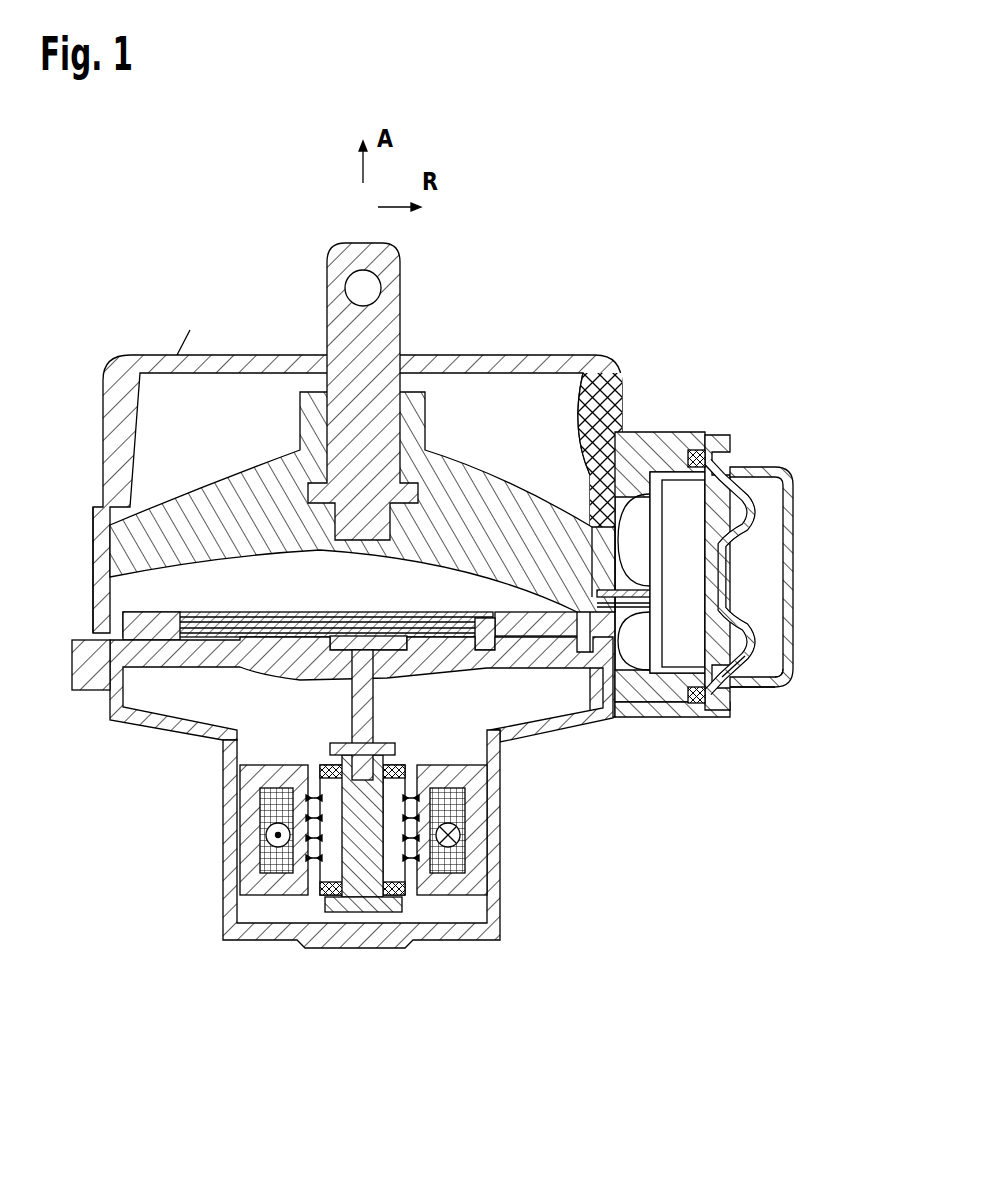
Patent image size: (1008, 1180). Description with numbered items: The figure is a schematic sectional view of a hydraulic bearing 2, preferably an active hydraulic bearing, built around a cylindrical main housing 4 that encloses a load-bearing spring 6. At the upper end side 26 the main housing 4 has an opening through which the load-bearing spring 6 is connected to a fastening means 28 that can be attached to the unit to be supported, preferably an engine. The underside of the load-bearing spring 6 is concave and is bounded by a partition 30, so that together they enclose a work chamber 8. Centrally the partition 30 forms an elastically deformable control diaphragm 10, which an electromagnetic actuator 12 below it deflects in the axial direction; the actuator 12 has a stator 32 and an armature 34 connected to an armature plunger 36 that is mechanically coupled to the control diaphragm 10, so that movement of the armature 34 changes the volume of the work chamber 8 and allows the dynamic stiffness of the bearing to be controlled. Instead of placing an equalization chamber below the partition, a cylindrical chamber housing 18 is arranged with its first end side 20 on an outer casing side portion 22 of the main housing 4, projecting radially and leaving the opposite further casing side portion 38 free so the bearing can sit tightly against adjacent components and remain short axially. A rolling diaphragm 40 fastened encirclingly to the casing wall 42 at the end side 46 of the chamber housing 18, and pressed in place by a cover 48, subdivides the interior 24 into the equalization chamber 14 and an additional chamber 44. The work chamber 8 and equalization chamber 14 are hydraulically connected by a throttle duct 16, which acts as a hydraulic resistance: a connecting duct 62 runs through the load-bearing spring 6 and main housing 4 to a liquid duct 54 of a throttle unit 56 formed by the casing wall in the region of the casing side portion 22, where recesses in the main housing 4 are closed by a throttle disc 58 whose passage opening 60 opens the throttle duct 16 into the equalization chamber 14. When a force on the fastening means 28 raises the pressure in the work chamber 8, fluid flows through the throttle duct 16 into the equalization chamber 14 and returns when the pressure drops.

The hydraulic bearing 2 is at (644, 287).
The main housing 4 is at (612, 372).
The load-bearing spring 6 is at (190, 520).
The work chamber 8 is at (237, 597).
The control diaphragm 10 is at (480, 662).
The actuator 12 is at (508, 843).
The equalization chamber 14 is at (685, 610).
The throttle duct 16 is at (640, 540).
The cylindrical chamber housing 18 is at (714, 419).
The first end side 20 is at (663, 719).
The casing side portion 22 is at (632, 453).
The interior 24 is at (754, 708).
The upper end side 26 is at (177, 355).
The fastening means 28 is at (388, 322).
The partition 30 is at (180, 620).
The stator 32 is at (467, 860).
The armature 34 is at (380, 878).
The armature plunger 36 is at (345, 718).
The further casing side portion 38 is at (93, 400).
The rolling diaphragm 40 is at (770, 500).
The casing wall 42 is at (702, 690).
The additional chamber 44 is at (767, 650).
The end side 46 is at (724, 438).
The cover 48 is at (790, 472).
The liquid duct 54 is at (724, 694).
The throttle unit 56 is at (600, 382).
The throttle disc 58 is at (792, 688).
The passage opening 60 is at (655, 600).
The connecting duct 62 is at (753, 578).